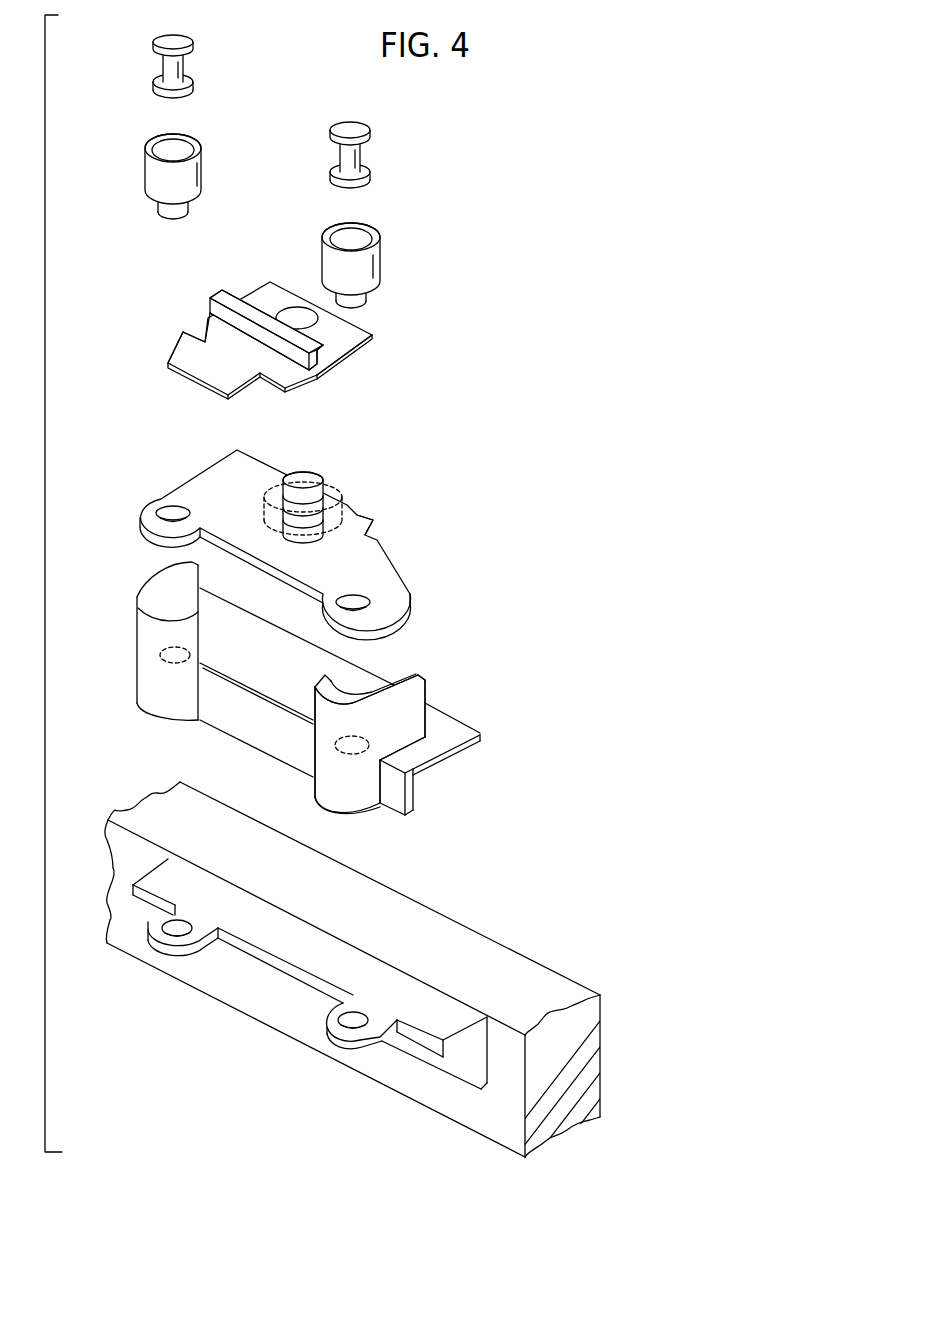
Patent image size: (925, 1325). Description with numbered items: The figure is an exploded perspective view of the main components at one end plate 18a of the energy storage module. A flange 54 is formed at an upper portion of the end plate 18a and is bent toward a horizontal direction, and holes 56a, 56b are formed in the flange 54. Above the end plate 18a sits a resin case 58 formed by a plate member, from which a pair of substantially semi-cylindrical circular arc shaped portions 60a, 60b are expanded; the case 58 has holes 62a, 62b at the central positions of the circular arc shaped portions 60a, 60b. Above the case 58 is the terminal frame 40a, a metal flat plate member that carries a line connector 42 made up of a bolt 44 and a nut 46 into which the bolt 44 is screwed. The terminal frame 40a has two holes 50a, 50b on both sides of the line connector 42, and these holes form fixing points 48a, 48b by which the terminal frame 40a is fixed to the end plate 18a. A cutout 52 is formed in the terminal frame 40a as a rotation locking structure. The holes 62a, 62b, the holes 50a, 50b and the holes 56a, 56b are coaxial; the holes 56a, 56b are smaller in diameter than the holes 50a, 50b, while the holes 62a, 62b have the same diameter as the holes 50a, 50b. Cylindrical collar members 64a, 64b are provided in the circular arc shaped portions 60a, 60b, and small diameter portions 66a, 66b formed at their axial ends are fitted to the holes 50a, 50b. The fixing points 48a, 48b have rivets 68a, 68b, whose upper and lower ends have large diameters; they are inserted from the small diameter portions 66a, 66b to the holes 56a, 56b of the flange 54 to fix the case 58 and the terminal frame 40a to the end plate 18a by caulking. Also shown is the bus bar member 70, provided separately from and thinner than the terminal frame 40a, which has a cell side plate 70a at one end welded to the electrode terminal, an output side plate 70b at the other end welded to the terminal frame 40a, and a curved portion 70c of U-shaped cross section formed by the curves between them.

The end plate 18a is at (447, 986).
The flange 54 is at (314, 945).
The hole 56a is at (176, 930).
The hole 56b is at (356, 1022).
The case 58 is at (284, 695).
The circular arc shaped portion 60a is at (167, 663).
The circular arc shaped portion 60b is at (397, 763).
The hole 62a is at (167, 662).
The hole 62b is at (345, 754).
The terminal frame 40a is at (265, 522).
The line connector 42 is at (342, 488).
The bolt 44 is at (306, 474).
The nut 46 is at (337, 495).
The hole 50a is at (176, 508).
The hole 50b is at (360, 600).
The cutout 52 is at (370, 528).
The bus bar member 70 is at (268, 342).
The cell side plate 70a is at (332, 356).
The output side plate 70b is at (208, 373).
The curved portion 70c is at (290, 345).
The fixing point 48a is at (167, 122).
The fixing point 48b is at (408, 200).
The rivet 68a is at (181, 66).
The rivet 68b is at (358, 156).
The collar member 64a is at (203, 137).
The collar member 64b is at (380, 230).
The small diameter portion 66a is at (189, 208).
The small diameter portion 66b is at (367, 300).